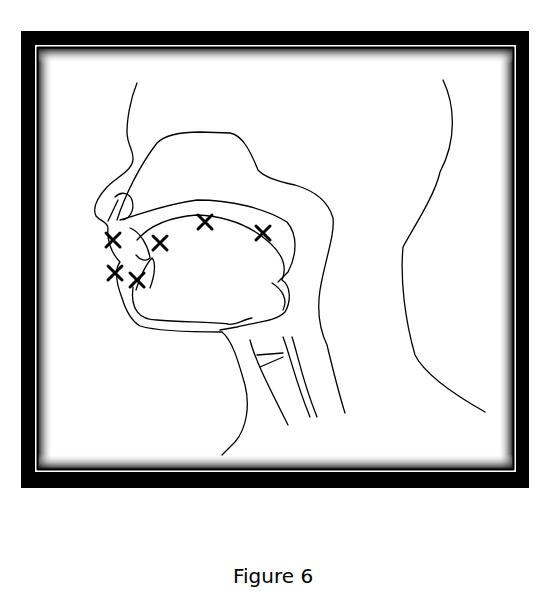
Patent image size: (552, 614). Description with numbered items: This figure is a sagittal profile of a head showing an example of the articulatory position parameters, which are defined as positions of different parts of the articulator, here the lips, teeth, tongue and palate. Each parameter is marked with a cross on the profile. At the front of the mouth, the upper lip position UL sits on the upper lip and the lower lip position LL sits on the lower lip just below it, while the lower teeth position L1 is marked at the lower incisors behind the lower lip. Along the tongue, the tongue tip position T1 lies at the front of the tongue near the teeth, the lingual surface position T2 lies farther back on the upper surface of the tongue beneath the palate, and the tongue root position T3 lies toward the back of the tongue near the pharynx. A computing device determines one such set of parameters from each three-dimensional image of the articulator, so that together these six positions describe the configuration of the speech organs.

The upper lip position UL is at (88, 238).
The lower lip position LL is at (93, 281).
The lower teeth position L1 is at (137, 280).
The tongue tip position T1 is at (170, 256).
The lingual surface position T2 is at (213, 235).
The tongue root position T3 is at (260, 247).